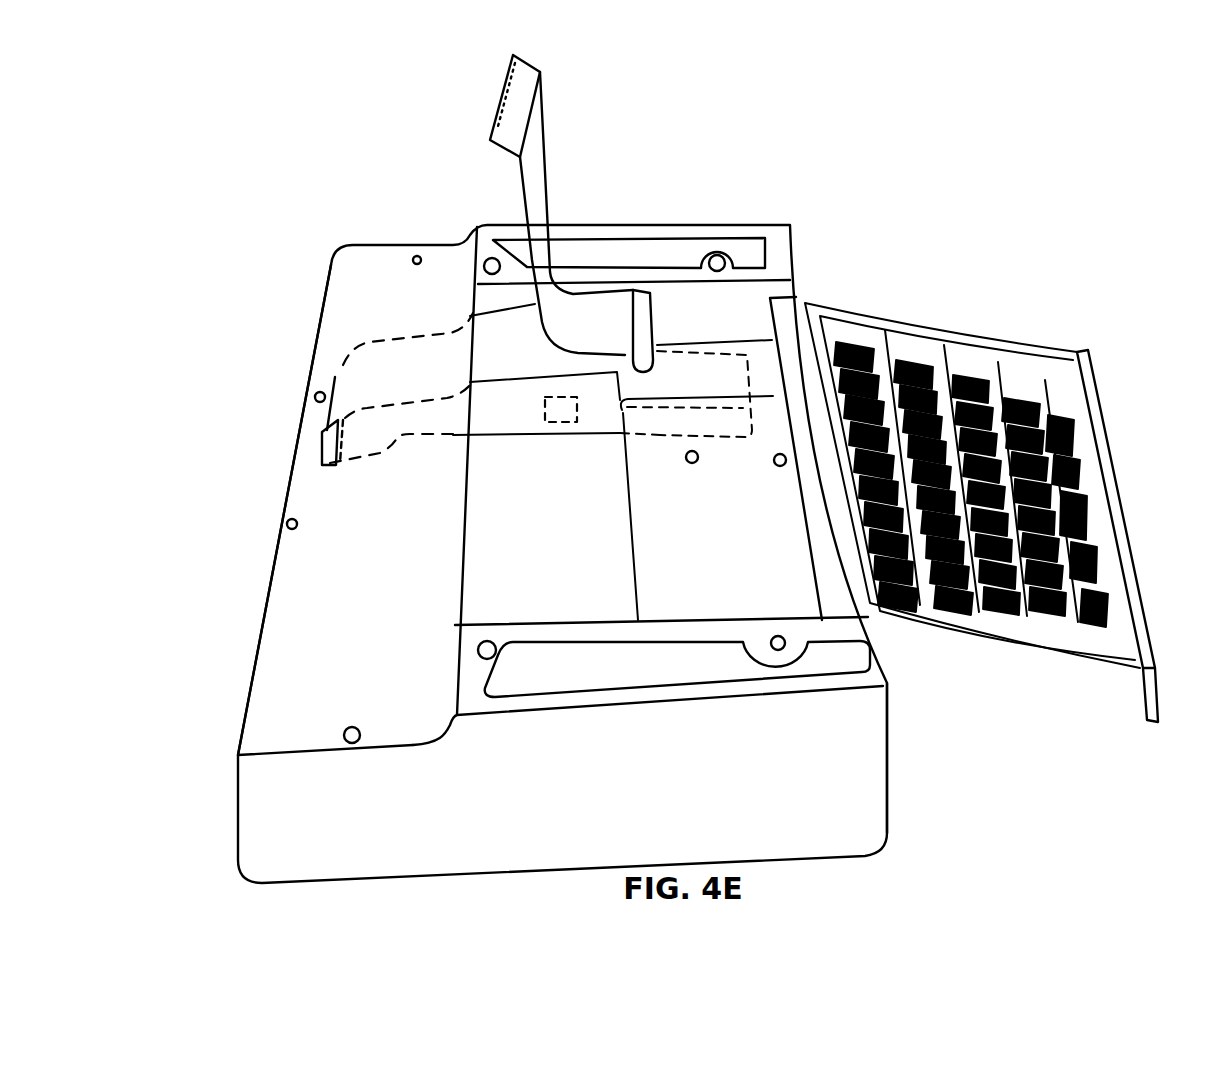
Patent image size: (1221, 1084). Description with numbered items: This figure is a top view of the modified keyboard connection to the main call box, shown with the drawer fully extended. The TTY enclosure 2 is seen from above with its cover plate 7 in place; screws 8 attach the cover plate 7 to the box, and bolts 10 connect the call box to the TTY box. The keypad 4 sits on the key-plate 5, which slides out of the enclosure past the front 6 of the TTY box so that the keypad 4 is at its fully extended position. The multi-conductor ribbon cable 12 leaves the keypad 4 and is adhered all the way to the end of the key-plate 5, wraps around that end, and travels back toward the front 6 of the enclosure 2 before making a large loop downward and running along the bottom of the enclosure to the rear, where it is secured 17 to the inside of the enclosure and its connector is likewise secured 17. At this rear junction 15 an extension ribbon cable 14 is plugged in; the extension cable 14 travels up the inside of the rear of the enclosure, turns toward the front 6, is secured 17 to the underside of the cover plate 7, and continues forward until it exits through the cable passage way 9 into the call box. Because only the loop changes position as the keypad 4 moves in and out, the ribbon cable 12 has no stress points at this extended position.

The housing of TTY box 2 is at (392, 850).
The keypad 4 is at (887, 356).
The key-plate 5 is at (1105, 415).
The front of TTY box 6 is at (893, 793).
The cover plate of TTY box 7 is at (263, 632).
The screws to attach cover plate 8 is at (355, 727).
The cable passage way 9 is at (637, 285).
The bolts connecting call box to TTY box 10 is at (500, 648).
The ribbon cable 12 is at (510, 425).
The extension ribbon cable 14 is at (545, 150).
The ribbon cable junction 15 is at (317, 448).
The secured to inside keyboard housing 17 is at (413, 353).